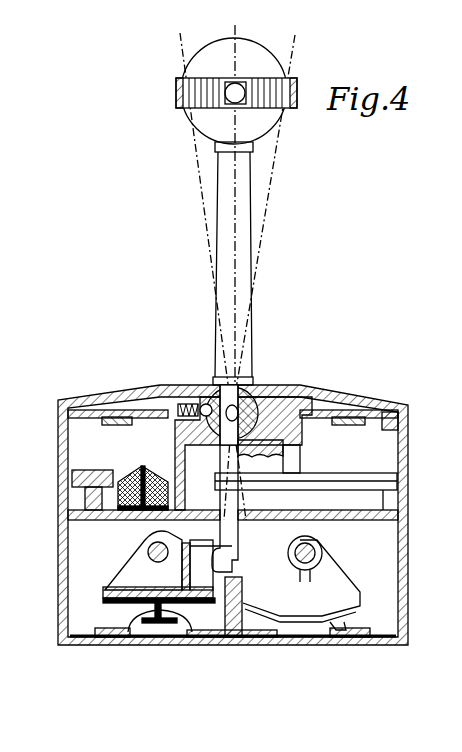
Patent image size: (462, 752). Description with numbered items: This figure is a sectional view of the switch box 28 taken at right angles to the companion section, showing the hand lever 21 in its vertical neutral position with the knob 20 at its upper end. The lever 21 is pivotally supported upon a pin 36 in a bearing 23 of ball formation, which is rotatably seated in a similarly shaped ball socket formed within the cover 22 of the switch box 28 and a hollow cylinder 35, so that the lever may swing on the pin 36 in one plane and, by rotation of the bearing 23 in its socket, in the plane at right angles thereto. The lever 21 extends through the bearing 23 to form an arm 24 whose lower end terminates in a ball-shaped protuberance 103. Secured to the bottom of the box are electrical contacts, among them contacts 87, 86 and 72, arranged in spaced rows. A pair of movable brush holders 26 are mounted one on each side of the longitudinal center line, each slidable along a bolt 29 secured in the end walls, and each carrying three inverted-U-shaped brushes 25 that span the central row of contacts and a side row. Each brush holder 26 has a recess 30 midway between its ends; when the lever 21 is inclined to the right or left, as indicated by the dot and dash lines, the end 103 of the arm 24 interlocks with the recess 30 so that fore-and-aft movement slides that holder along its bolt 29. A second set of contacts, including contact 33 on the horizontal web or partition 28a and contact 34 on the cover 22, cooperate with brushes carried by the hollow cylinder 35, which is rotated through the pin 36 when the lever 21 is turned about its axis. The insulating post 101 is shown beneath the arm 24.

The knob 20 is at (197, 133).
The hand lever 21 is at (226, 224).
The cover 22 is at (185, 403).
The bearing 23 is at (207, 403).
The arm 24 is at (221, 498).
The brushes 25 is at (107, 621).
The brush holders 26 is at (128, 568).
The switch box 28 is at (63, 553).
The horizontal web or partition 28a is at (112, 518).
The bolt 29 is at (151, 552).
The recess 30 is at (169, 602).
The contact 33 is at (97, 470).
The contact 34 is at (115, 425).
The hollow cylinder 35 is at (183, 467).
The pin 36 is at (252, 410).
The electrical contact 72 is at (346, 645).
The electrical contact 86 is at (226, 645).
The electrical contact 87 is at (110, 645).
The insulating post 101 is at (242, 597).
The ball-shaped protuberance 103 is at (222, 560).